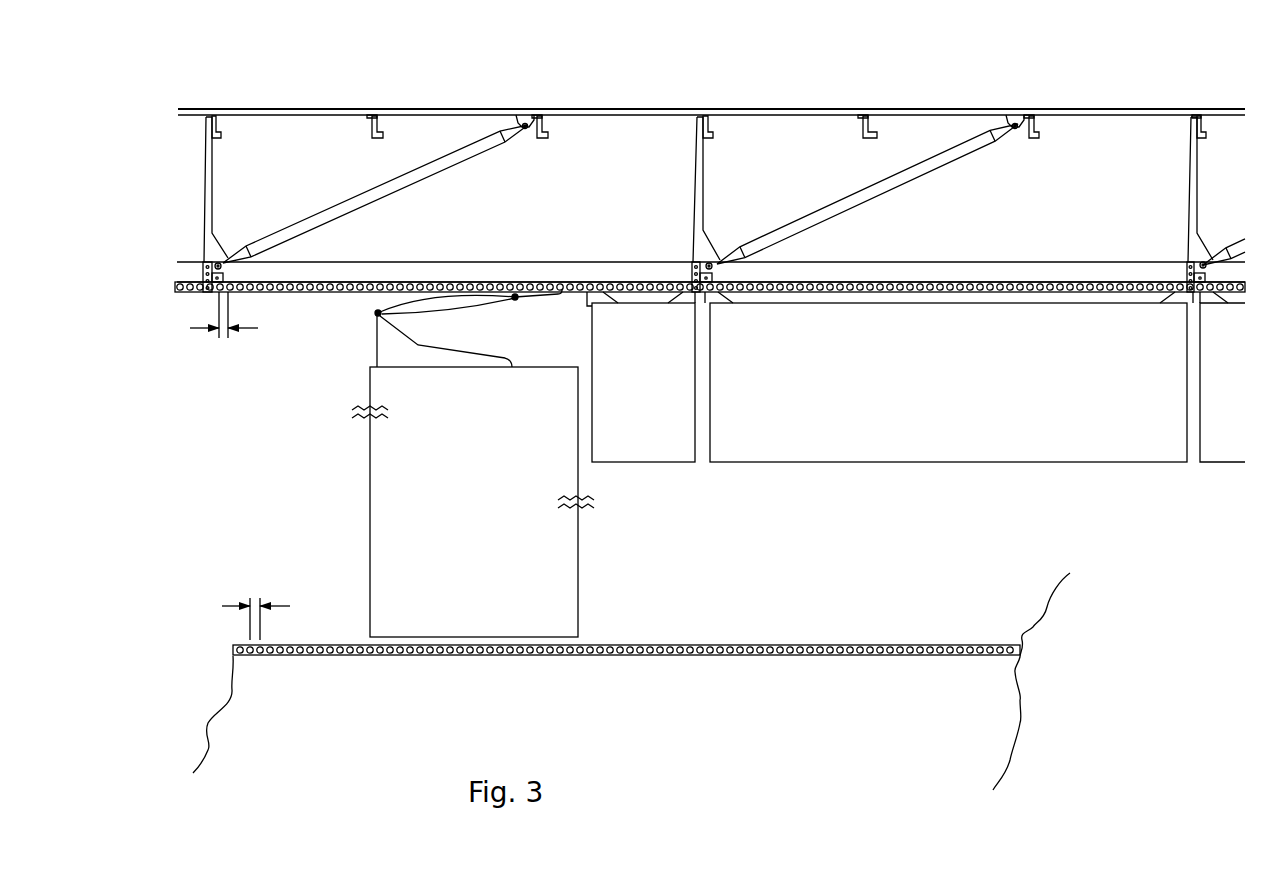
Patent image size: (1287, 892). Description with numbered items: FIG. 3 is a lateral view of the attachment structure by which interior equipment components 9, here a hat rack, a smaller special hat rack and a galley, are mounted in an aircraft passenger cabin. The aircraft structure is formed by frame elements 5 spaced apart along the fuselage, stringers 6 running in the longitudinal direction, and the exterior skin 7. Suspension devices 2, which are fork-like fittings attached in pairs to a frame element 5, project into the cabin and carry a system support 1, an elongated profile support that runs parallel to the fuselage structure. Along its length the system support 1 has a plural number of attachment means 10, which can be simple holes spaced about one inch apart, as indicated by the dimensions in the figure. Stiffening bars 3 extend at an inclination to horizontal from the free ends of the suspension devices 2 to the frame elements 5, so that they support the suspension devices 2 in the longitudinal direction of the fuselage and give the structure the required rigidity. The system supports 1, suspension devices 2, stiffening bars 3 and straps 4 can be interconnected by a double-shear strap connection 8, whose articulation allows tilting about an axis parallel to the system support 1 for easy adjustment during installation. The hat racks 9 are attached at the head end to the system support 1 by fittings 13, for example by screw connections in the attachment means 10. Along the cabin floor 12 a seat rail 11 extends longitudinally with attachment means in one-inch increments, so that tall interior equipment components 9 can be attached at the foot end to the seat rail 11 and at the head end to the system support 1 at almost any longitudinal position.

The system support 1 is at (522, 263).
The suspension device 2 is at (698, 228).
The stiffening bar 3 is at (822, 205).
The strap 4 is at (1017, 122).
The frame element 5 is at (378, 127).
The stringer 6 is at (300, 110).
The exterior skin 7 is at (488, 107).
The double-shear strap connection 8 is at (527, 125).
The interior equipment component 9 is at (407, 462).
The attachment means 10 is at (1030, 283).
The seat rail 11 is at (662, 652).
The cabin floor 12 is at (1023, 710).
The fitting 13 is at (387, 348).